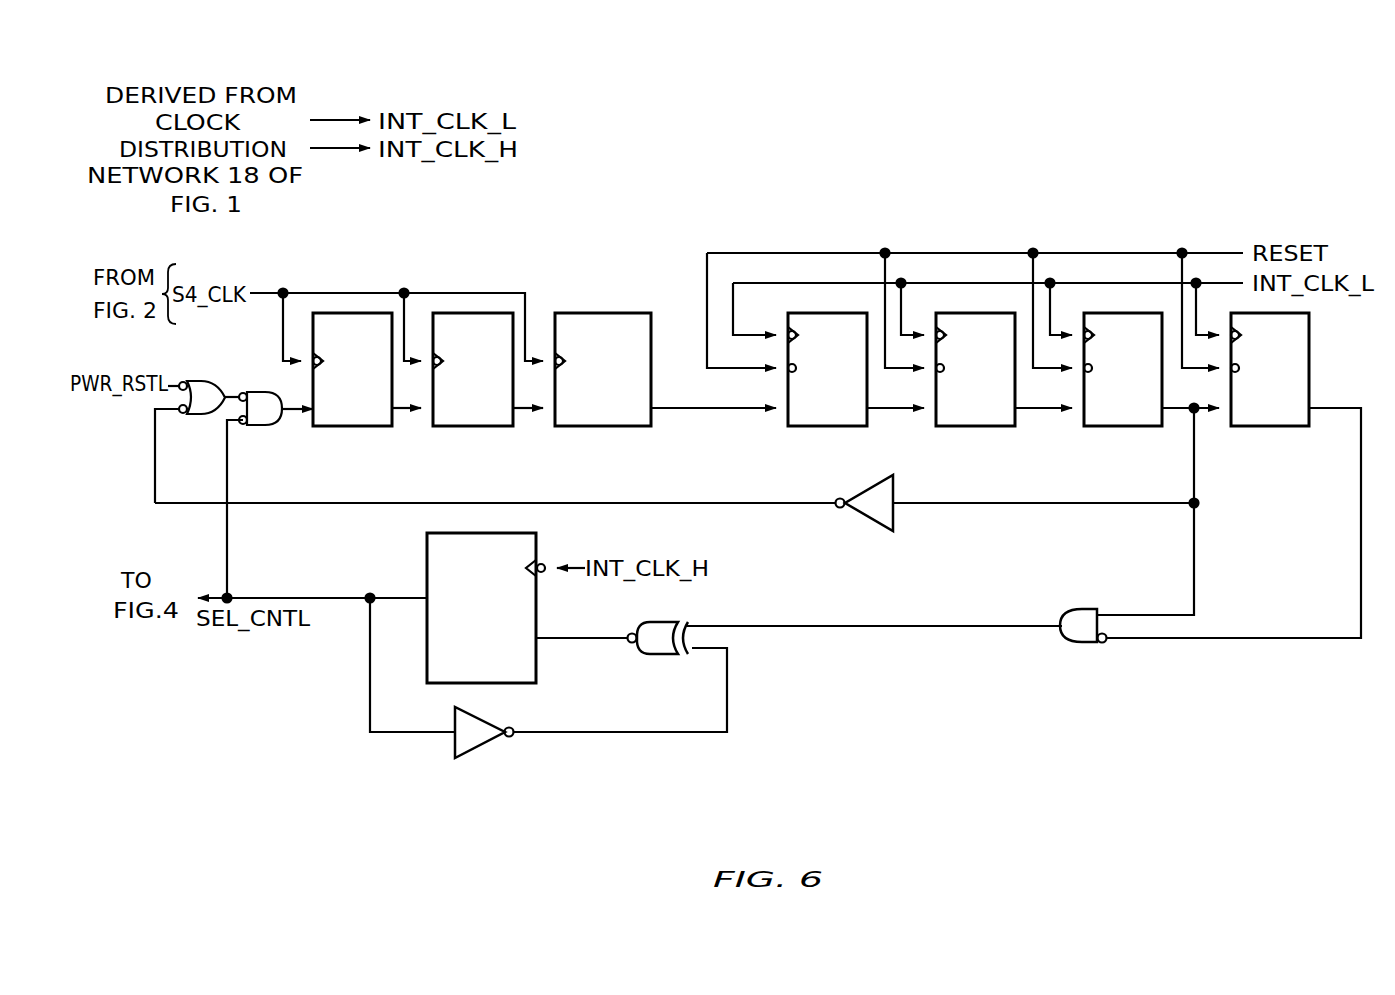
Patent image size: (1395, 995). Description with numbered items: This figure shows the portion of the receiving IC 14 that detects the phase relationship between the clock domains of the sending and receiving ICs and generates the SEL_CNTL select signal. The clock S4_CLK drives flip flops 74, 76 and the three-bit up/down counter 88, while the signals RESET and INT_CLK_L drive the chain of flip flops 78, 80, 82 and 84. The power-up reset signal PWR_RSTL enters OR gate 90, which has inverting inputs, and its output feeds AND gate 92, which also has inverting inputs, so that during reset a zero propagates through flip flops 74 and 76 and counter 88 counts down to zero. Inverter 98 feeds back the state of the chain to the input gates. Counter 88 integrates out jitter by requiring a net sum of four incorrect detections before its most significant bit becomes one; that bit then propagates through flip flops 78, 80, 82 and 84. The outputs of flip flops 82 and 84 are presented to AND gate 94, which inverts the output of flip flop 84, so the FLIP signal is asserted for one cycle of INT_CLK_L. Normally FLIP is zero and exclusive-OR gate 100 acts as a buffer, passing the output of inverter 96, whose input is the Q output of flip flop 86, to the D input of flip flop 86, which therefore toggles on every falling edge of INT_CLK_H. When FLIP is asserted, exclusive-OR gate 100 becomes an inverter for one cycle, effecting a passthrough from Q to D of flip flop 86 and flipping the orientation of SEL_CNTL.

The IC 14 is at (198, 763).
The flip flop 74 is at (339, 426).
The flip flop 76 is at (460, 427).
The flip flop 78 is at (812, 427).
The flip flop 80 is at (962, 427).
The flip flop 82 is at (1109, 427).
The flip flop 84 is at (1257, 427).
The flip flop 86 is at (427, 549).
The 3-bit up/down counter 88 is at (577, 427).
The OR gate 90 is at (199, 416).
The AND gate 92 is at (261, 425).
The AND gate 94 is at (1086, 644).
The inverter 96 is at (485, 744).
The inverter 98 is at (860, 513).
The exclusive-OR gate 100 is at (674, 655).